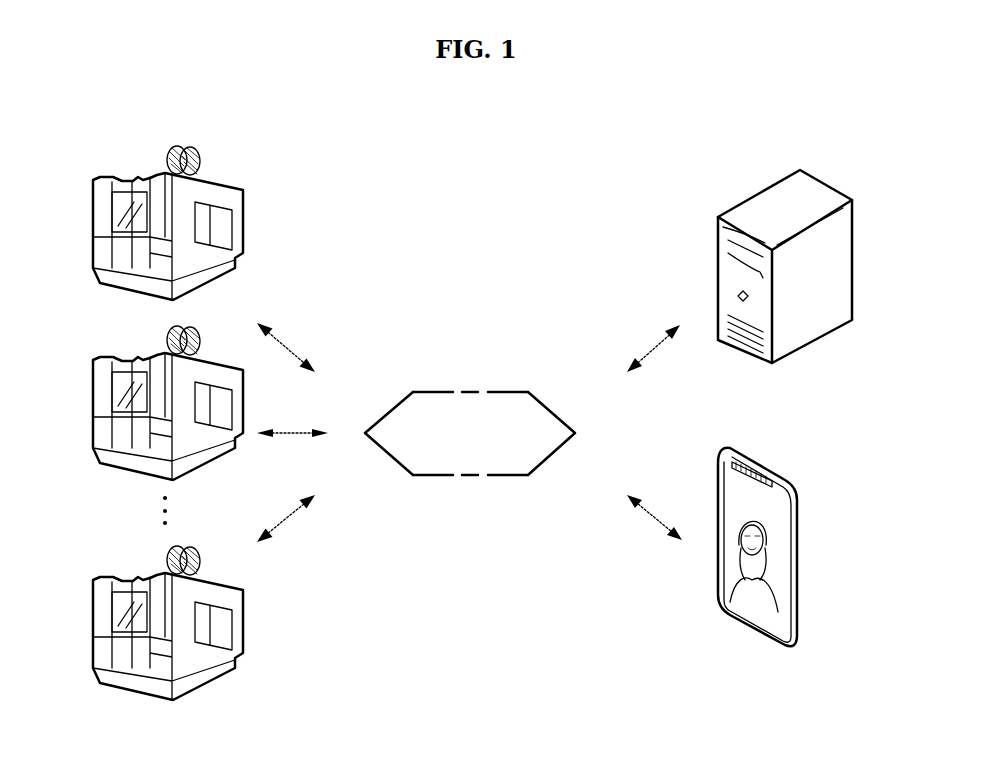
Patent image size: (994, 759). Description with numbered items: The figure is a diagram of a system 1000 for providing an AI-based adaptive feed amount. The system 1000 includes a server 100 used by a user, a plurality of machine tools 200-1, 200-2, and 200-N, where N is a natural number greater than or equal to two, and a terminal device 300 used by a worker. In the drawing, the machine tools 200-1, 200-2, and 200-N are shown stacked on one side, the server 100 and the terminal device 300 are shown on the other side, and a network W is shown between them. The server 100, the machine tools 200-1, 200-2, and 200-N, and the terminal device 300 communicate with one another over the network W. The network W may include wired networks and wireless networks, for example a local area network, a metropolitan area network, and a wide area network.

The machine tool 200-1 is at (135, 180).
The machine tool 200-2 is at (135, 360).
The machine tool 200-N is at (135, 580).
The network W is at (550, 407).
The server 100 is at (827, 182).
The terminal device 300 is at (762, 460).
The system 1000 is at (500, 698).